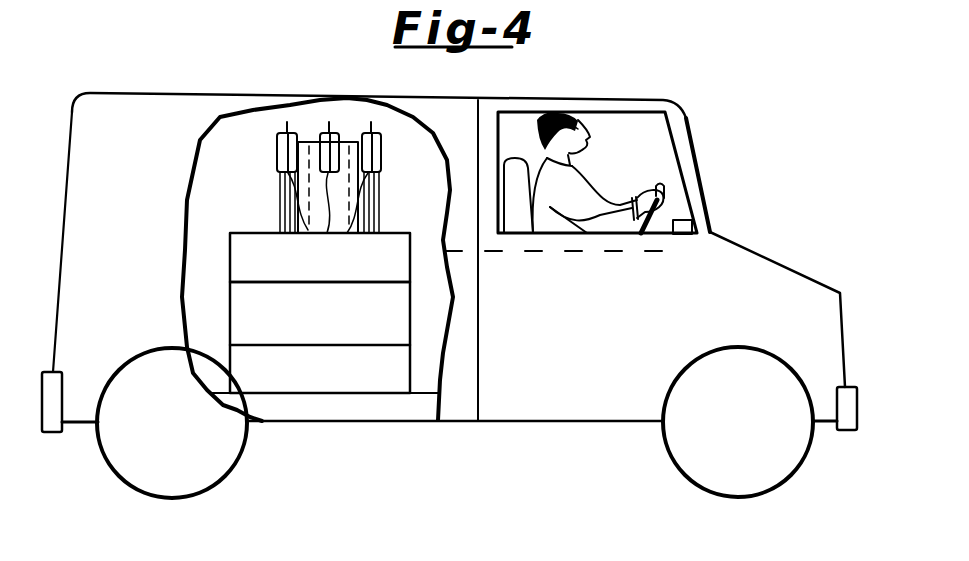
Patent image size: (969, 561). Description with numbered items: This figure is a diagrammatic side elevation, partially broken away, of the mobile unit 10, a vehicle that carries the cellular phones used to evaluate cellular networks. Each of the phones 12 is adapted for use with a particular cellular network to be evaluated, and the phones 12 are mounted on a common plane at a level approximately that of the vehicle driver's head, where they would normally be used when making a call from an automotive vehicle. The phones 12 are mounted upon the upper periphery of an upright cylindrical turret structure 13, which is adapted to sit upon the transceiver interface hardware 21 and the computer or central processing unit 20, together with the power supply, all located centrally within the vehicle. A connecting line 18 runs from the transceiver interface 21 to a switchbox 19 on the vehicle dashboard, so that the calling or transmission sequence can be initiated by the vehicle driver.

The mobile unit 10 is at (169, 88).
The phones 12 is at (318, 134).
The upright cylindrical turret structure 13 is at (280, 207).
The connecting line 18 is at (537, 252).
The switchbox 19 is at (692, 226).
The central processing unit 20 is at (230, 303).
The transceiver interface hardware 21 is at (230, 262).